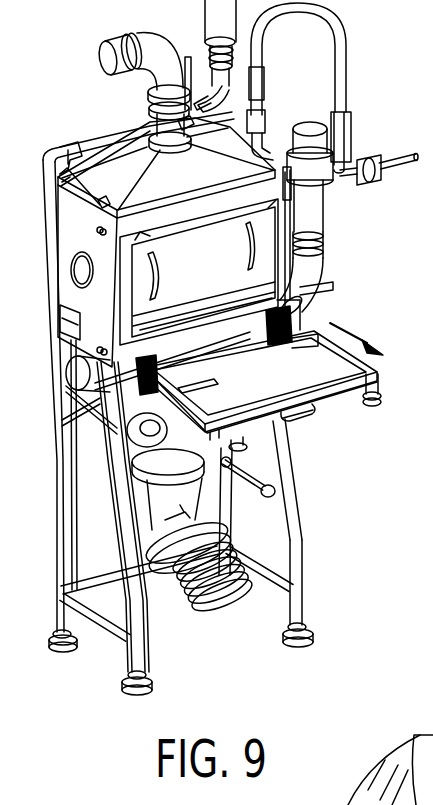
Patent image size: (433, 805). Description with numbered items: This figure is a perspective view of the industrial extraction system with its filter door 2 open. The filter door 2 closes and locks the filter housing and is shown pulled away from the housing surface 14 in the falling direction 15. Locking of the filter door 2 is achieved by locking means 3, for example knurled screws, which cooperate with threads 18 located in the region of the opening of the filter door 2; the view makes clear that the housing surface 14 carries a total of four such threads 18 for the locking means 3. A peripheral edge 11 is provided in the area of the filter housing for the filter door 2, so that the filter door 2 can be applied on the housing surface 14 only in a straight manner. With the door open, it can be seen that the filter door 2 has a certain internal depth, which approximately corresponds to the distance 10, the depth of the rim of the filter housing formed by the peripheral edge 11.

The filter door 2 is at (334, 402).
The locking means 3 is at (368, 410).
The distance 10 is at (270, 350).
The peripheral edge 11 is at (323, 253).
The housing surface 14 is at (300, 192).
The falling direction 15 is at (357, 337).
The threads 18 is at (267, 153).